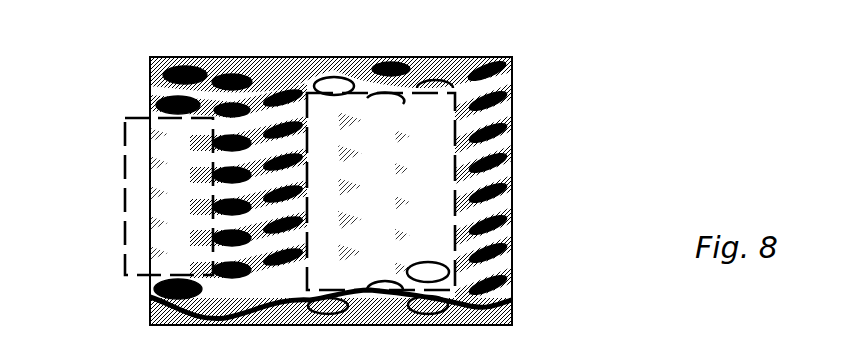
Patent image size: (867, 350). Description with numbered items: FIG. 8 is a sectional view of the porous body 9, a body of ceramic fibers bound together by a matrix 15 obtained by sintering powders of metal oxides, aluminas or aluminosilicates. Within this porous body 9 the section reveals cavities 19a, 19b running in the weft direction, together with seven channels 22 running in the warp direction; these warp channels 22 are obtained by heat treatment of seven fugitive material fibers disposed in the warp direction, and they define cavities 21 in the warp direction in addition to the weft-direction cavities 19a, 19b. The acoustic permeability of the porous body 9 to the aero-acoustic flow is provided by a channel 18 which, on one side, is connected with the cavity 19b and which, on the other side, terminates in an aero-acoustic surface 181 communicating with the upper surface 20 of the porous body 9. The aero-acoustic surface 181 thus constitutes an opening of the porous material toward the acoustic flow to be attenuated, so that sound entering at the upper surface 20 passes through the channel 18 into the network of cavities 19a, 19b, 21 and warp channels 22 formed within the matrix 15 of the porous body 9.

The porous body 9 is at (325, 164).
The upper surface 20 is at (196, 56).
The aero-acoustic surface 181 is at (325, 56).
The channel 18 is at (353, 71).
The matrix 15 is at (418, 63).
The cavity in the warp direction 21 is at (153, 82).
The channel in the warp direction 22 is at (502, 78).
The cavity in the weft direction 19a is at (125, 267).
The cavity in the weft direction 19b is at (512, 312).